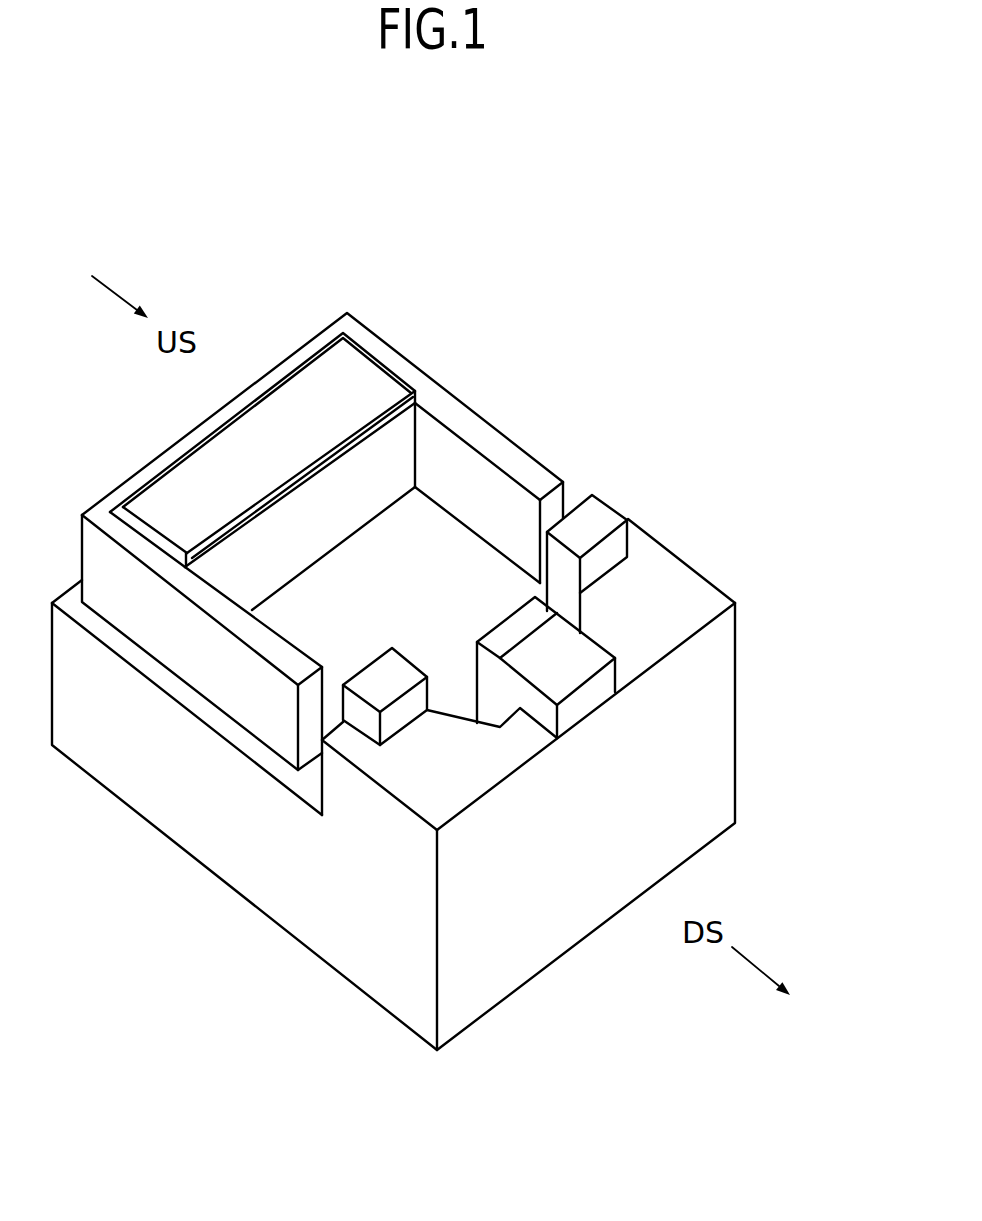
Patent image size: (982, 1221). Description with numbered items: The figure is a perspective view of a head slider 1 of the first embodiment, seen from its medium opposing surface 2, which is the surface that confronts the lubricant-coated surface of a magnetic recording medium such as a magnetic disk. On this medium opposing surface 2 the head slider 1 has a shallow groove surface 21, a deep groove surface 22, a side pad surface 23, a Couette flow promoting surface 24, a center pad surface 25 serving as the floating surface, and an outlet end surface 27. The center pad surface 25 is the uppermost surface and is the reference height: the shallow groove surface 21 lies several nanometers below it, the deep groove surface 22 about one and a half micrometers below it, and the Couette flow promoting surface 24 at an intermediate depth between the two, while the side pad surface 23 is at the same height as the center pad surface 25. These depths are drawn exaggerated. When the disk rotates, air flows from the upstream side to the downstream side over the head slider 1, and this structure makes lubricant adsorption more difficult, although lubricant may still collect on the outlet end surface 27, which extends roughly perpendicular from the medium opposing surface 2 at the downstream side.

The head slider 1 is at (603, 153).
The medium opposing surface 2 is at (544, 387).
The shallow groove surface 21 is at (222, 601).
The deep groove surface 22 is at (372, 595).
The side pad surface 23 is at (380, 691).
The Couette flow promoting surface 24 is at (427, 792).
The center pad surface 25 is at (565, 658).
The outlet end surface 27 is at (643, 790).